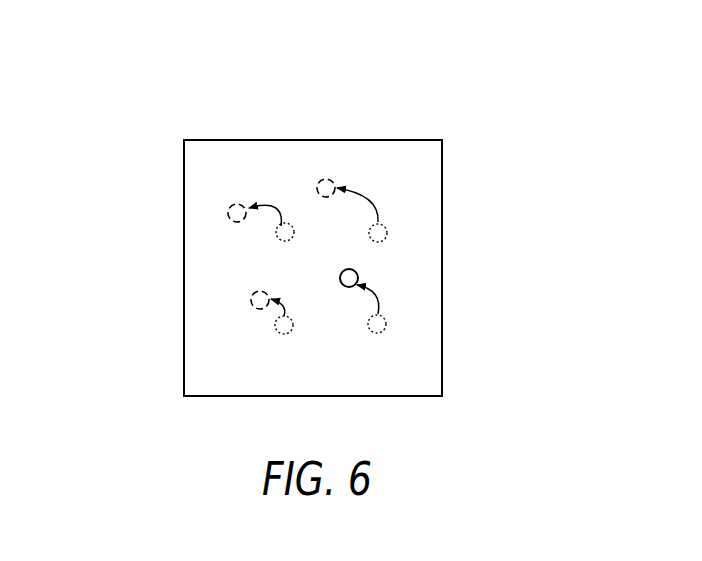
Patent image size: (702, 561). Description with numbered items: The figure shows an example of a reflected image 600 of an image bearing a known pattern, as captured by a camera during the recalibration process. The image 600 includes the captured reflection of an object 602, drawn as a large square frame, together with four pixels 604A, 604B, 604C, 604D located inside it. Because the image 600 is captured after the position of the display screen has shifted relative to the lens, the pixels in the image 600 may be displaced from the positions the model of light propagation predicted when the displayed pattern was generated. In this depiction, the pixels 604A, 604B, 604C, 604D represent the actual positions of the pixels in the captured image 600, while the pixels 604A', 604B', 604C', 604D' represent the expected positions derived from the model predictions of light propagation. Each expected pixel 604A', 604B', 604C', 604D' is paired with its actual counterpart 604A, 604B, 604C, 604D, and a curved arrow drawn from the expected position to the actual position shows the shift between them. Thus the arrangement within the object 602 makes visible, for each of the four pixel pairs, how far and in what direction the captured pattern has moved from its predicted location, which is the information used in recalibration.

The image 600 is at (174, 78).
The object 602 is at (289, 138).
The pixel 604A is at (185, 190).
The pixel 604A' is at (188, 249).
The pixel 604B is at (387, 160).
The pixel 604B' is at (443, 191).
The pixel 604C is at (179, 325).
The pixel 604C' is at (187, 366).
The pixel 604D is at (441, 264).
The pixel 604D' is at (472, 298).